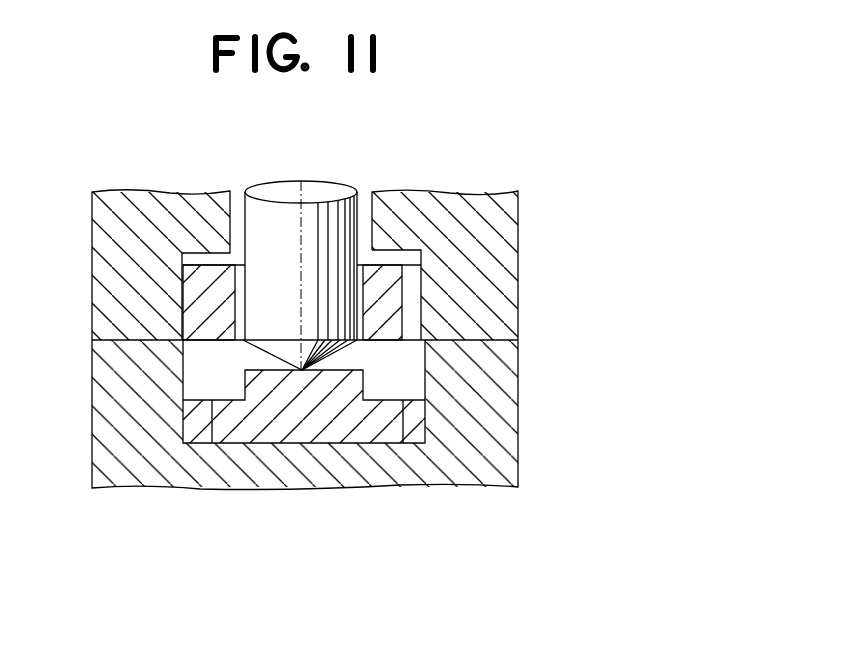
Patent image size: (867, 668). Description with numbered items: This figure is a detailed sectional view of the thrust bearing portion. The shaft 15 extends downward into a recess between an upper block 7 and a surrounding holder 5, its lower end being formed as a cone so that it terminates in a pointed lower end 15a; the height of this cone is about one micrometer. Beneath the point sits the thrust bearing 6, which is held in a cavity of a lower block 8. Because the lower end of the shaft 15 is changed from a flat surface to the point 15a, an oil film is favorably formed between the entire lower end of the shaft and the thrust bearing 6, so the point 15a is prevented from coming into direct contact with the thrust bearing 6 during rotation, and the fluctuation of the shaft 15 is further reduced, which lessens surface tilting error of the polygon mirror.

The die holder 5 is at (405, 262).
The thrust bearing 6 is at (383, 432).
The upper block 7 is at (100, 225).
The lower block 8 is at (107, 483).
The shaft 15 is at (282, 192).
The pointed lower end 15a is at (302, 372).